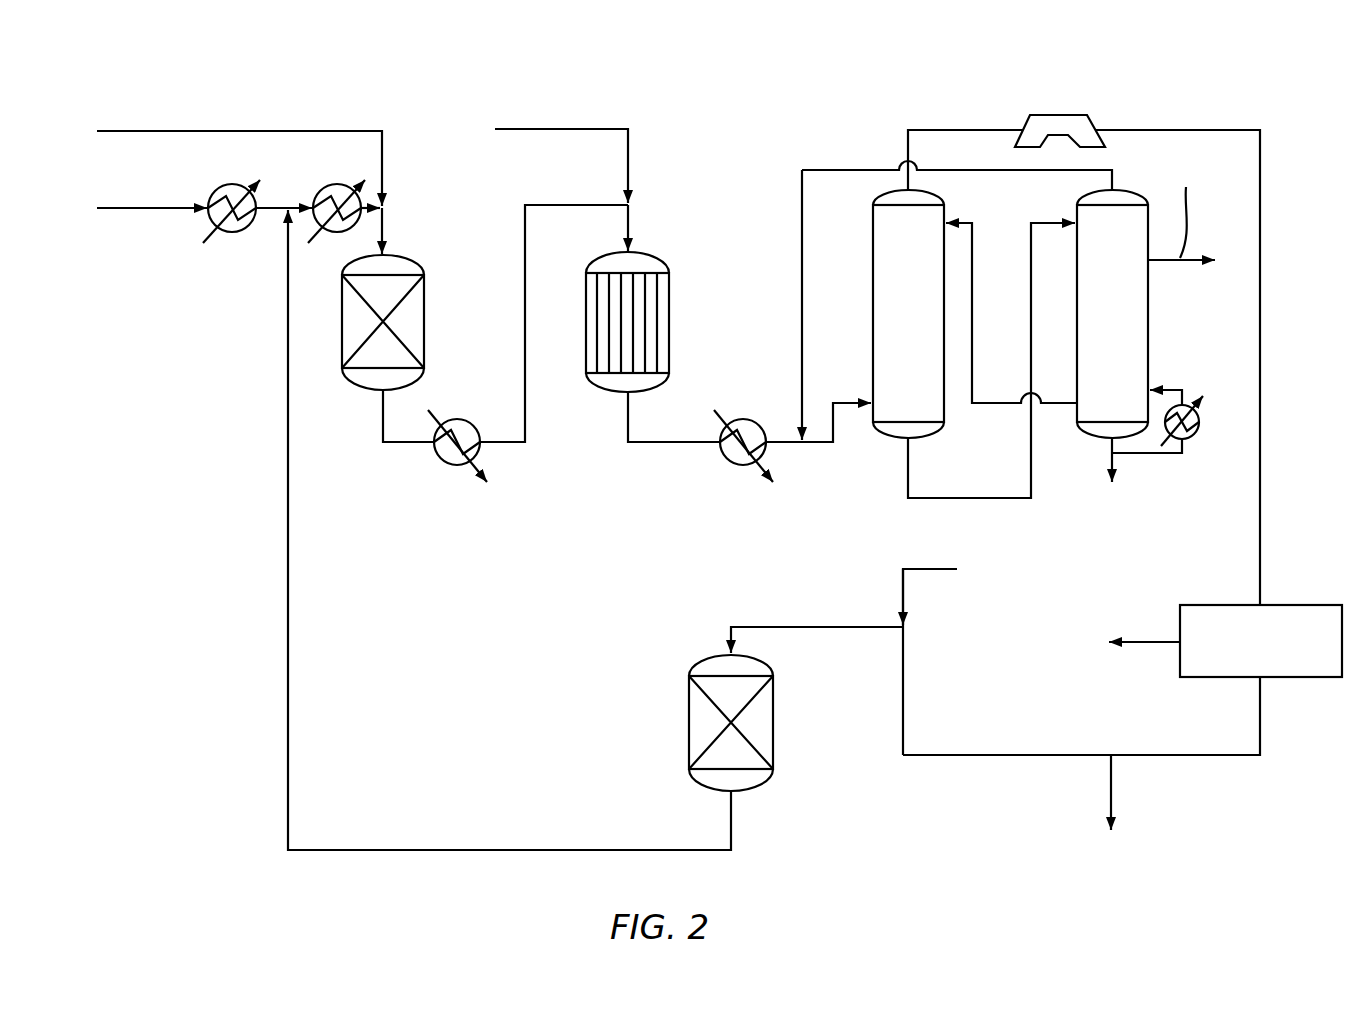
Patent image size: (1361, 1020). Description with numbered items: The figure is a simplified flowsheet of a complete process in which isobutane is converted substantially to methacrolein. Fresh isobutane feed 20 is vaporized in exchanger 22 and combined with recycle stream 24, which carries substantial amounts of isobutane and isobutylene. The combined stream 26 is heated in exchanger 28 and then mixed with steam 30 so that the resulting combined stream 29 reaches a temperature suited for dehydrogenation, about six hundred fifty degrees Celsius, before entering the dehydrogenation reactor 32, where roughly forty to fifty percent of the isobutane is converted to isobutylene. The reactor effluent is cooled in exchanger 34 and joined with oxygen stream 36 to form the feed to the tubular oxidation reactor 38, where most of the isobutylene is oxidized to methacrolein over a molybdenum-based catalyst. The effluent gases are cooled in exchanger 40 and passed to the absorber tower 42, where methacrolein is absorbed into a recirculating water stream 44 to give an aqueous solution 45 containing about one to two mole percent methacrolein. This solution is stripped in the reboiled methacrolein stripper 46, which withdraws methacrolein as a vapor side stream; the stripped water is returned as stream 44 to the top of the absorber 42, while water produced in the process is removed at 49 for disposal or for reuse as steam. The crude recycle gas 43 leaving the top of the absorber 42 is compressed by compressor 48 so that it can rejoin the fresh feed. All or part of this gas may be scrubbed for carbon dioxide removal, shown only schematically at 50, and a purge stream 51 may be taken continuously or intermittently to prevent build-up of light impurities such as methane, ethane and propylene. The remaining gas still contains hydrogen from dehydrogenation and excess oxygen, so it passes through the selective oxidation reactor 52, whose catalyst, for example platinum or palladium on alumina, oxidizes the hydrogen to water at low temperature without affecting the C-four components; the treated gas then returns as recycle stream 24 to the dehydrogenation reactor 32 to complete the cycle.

The fresh isobutane feed 20 is at (166, 212).
The exchanger 22 is at (234, 233).
The recycle stream 24 is at (288, 407).
The combined stream 26 is at (300, 207).
The exchanger 28 is at (332, 233).
The combined stream 29 is at (385, 224).
The steam 30 is at (220, 130).
The dehydrogenation reactor 32 is at (424, 310).
The exchanger 34 is at (438, 462).
The oxygen stream 36 is at (628, 157).
The oxidation reactor 38 is at (670, 290).
The exchanger 40 is at (723, 456).
The absorber tower 42 is at (873, 282).
The crude recycle gas 43 is at (933, 130).
The recirculating water stream 44 is at (973, 302).
The aqueous methacrolein solution 45 is at (992, 498).
The methacrolein stripper 46 is at (1148, 318).
The compressor 48 is at (1093, 114).
The water removal 49 is at (1112, 458).
The carbon dioxide removal 50 is at (1310, 678).
The purge stream 51 is at (1112, 790).
The oxidation reactor 52 is at (773, 717).